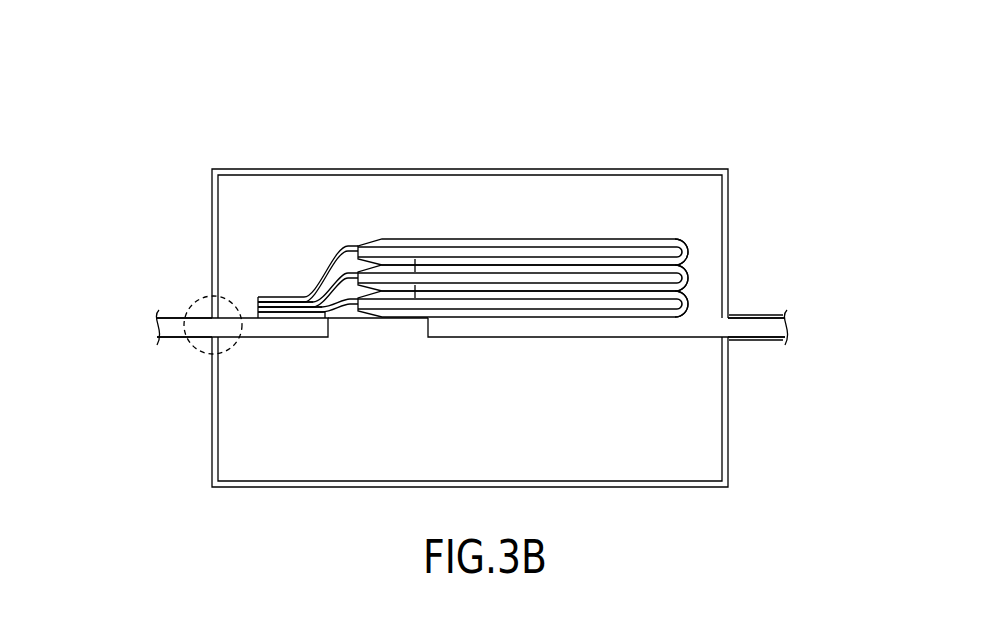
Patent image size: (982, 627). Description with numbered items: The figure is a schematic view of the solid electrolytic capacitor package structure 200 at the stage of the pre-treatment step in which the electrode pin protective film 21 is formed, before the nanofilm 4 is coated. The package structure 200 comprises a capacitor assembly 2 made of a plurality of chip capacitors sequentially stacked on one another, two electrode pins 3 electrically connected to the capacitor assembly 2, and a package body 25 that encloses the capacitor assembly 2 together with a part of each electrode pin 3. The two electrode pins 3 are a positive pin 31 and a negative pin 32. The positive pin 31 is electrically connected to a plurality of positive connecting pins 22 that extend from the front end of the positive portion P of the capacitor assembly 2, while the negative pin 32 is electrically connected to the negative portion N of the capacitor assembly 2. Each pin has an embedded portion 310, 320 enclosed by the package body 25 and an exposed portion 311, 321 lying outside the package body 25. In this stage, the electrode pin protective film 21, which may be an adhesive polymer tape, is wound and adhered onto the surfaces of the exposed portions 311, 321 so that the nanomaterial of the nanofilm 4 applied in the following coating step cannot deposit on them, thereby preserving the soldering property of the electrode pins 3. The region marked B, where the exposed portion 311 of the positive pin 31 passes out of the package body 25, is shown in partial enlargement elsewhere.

The solid electrolytic capacitor package structure 200 is at (192, 84).
The nanofilm 4 is at (423, 166).
The package body 25 is at (353, 192).
The capacitor assembly 2 is at (576, 267).
The positive connecting pin 22 is at (288, 303).
The electrode pin protective film 21 is at (174, 317).
The electrode pin 3 is at (472, 372).
The positive pin 31 is at (205, 372).
The embedded portion 310 is at (290, 332).
The exposed portion 311 is at (194, 338).
The negative pin 32 is at (598, 372).
The embedded portion 320 is at (656, 332).
The exposed portion 321 is at (747, 338).
The positive portion P is at (337, 252).
The negative portion N is at (645, 236).
The part B is at (210, 299).